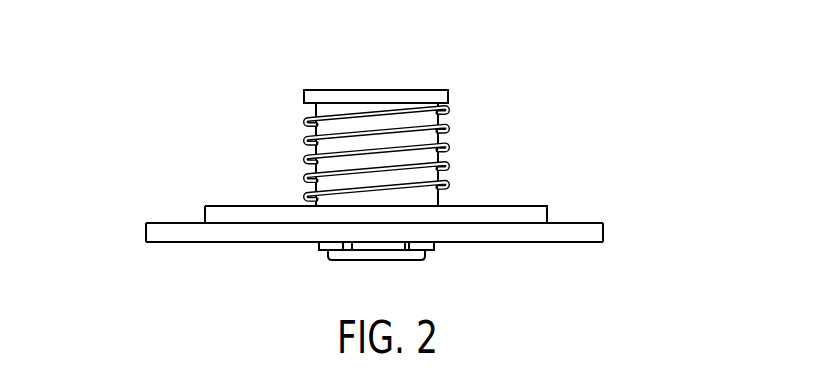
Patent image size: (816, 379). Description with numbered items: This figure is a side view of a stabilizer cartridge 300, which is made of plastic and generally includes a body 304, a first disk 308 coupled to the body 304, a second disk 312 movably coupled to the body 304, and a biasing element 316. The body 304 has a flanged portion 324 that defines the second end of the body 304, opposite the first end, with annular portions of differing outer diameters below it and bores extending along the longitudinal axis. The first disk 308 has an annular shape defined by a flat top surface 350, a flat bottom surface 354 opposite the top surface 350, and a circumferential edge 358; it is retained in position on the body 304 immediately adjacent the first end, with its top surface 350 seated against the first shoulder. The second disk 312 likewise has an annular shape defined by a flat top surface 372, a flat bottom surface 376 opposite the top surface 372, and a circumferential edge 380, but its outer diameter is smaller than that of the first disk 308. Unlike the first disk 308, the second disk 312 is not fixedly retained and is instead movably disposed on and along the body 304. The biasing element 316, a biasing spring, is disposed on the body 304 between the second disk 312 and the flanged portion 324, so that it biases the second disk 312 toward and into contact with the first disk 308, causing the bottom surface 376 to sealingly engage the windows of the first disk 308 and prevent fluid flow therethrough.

The stabilizer cartridge 300 is at (388, 157).
The body 304 is at (410, 105).
The first disk 308 is at (388, 225).
The second disk 312 is at (390, 181).
The biasing element 316 is at (465, 124).
The flanged portion 324 is at (322, 97).
The top surface 350 is at (588, 223).
The bottom surface 354 is at (562, 243).
The circumferential edge 358 is at (145, 228).
The top surface 372 is at (468, 205).
The bottom surface 376 is at (518, 222).
The circumferential edge 380 is at (205, 217).